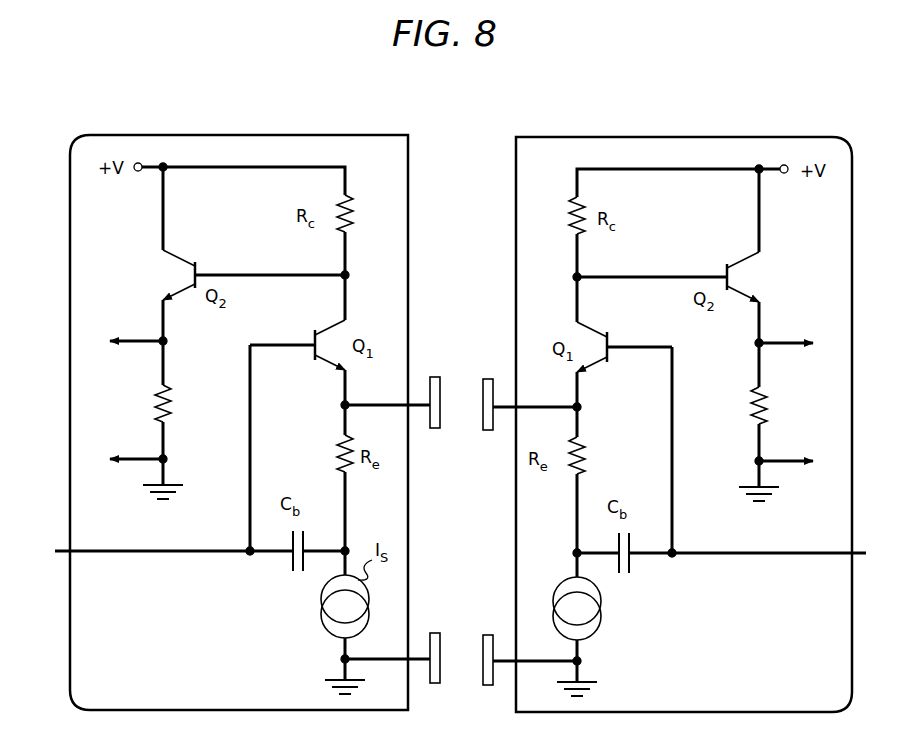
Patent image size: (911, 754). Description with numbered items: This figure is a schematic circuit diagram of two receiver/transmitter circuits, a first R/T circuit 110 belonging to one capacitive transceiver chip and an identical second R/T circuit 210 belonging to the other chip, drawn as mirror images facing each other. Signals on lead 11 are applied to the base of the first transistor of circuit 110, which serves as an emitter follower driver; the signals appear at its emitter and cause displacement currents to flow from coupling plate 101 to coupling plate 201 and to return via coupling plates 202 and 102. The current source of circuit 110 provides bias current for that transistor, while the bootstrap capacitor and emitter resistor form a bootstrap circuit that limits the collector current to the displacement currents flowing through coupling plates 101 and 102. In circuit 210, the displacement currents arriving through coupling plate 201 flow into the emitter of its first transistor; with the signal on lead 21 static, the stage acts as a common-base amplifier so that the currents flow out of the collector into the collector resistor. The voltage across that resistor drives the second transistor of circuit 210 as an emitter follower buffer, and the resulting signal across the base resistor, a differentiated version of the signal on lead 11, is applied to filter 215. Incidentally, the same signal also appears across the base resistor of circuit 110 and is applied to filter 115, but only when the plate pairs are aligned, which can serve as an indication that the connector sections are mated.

The receiver/transmitter circuit 110 is at (252, 135).
The receiver/transmitter circuit 210 is at (637, 137).
The coupling plate 101 is at (433, 377).
The coupling plate 102 is at (433, 633).
The coupling plate 201 is at (487, 379).
The coupling plate 202 is at (487, 635).
The lead 11 is at (139, 551).
The lead 21 is at (786, 554).
The matched edge detection filter 115 is at (120, 400).
The matched edge detection filter 215 is at (795, 402).